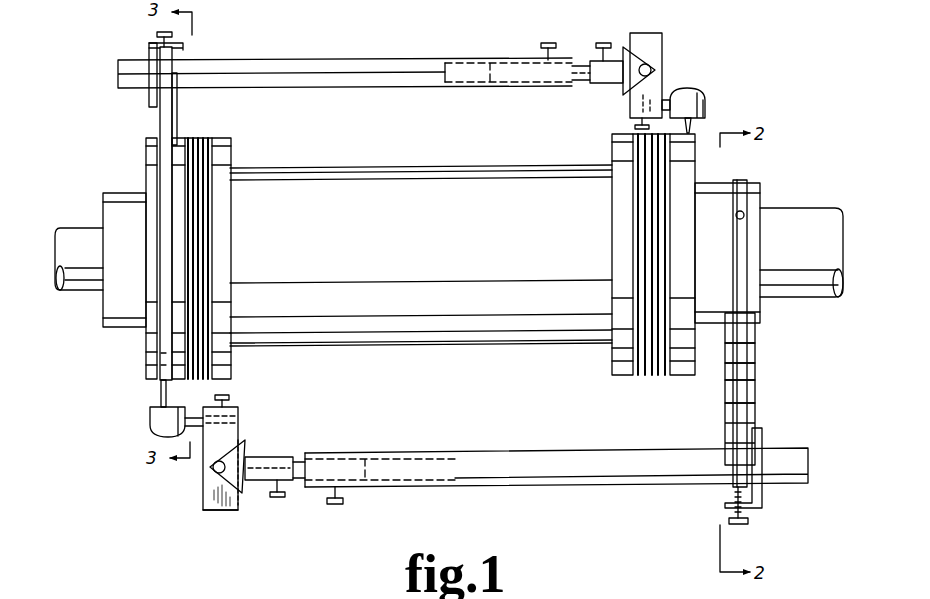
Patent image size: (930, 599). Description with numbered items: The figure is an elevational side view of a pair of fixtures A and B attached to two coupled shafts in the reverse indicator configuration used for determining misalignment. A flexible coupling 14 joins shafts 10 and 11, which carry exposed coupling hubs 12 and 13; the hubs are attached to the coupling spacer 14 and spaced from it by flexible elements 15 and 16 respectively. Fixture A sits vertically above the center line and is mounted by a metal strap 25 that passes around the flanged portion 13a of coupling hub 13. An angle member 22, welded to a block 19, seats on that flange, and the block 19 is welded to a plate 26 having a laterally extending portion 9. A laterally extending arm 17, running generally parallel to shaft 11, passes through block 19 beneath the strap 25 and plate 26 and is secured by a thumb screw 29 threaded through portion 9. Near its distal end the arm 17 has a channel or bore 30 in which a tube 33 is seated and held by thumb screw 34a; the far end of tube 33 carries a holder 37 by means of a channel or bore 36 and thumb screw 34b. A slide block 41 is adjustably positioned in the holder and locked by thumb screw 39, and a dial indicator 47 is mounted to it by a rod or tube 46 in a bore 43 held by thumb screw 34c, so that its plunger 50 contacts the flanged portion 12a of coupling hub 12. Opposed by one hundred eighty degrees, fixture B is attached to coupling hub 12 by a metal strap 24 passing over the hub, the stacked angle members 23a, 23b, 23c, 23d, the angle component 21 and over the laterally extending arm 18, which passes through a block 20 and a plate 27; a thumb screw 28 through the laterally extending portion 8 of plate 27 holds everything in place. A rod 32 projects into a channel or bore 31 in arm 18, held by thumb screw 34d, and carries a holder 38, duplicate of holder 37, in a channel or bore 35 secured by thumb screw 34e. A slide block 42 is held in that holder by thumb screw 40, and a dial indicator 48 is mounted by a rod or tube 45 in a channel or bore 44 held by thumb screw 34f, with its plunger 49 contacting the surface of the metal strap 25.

The laterally extending portion of plate 8 is at (726, 506).
The laterally extending portion of plate 9 is at (184, 46).
The shaft 10 is at (820, 215).
The shaft 11 is at (65, 235).
The coupling hub 12 is at (726, 182).
The flanged portion of coupling hub 12a is at (676, 378).
The coupling hub 13 is at (101, 305).
The flanged portion of coupling hub 13a is at (147, 362).
The flexible coupling 14 is at (417, 253).
The flexible element 15 is at (645, 378).
The flexible element 16 is at (204, 152).
The laterally extending arm 17 is at (358, 59).
The laterally extending arm 18 is at (562, 487).
The block 19 is at (162, 90).
The block 20 is at (750, 458).
The angle component 21 is at (755, 415).
The angle member 22 is at (178, 120).
The angle member 23a is at (755, 393).
The angle member 23b is at (755, 373).
The angle member 23c is at (755, 355).
The angle member 23d is at (755, 335).
The metal strap 24 is at (738, 240).
The metal strap 25 is at (163, 130).
The plate 26 is at (148, 48).
The plate 27 is at (763, 492).
The thumb screw 28 is at (749, 524).
The thumb screw 29 is at (158, 33).
The channel or bore 30 is at (474, 60).
The channel or bore 31 is at (375, 472).
The rod 32 is at (298, 480).
The tube 33 is at (595, 60).
The thumb screw 34a is at (548, 42).
The thumb screw 34b is at (603, 42).
The thumb screw 34c is at (636, 126).
The thumb screw 34d is at (334, 505).
The thumb screw 34e is at (276, 498).
The thumb screw 34f is at (228, 395).
The channel or bore 35 is at (270, 457).
The channel or bore 36 is at (592, 84).
The holder 37 is at (634, 50).
The holder 38 is at (232, 478).
The thumb screw 39 is at (660, 62).
The thumb screw 40 is at (213, 470).
The slide block 41 is at (662, 36).
The slide block 42 is at (232, 511).
The bore 43 is at (664, 98).
The channel or bore 44 is at (238, 416).
The rod or tube 45 is at (200, 415).
The rod or tube 46 is at (690, 88).
The dial indicator 47 is at (704, 106).
The dial indicator 48 is at (150, 425).
The plunger 49 is at (160, 398).
The plunger 50 is at (691, 128).
The fixture A is at (296, 57).
The fixture B is at (472, 489).